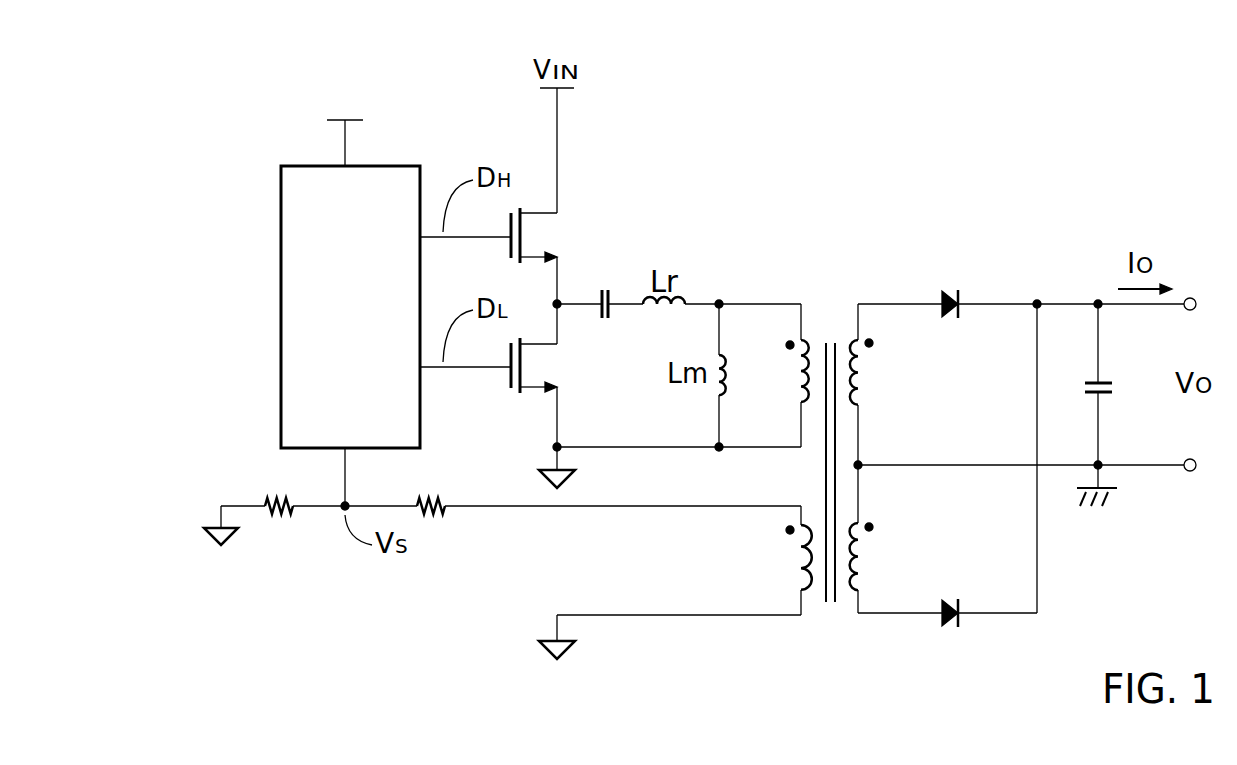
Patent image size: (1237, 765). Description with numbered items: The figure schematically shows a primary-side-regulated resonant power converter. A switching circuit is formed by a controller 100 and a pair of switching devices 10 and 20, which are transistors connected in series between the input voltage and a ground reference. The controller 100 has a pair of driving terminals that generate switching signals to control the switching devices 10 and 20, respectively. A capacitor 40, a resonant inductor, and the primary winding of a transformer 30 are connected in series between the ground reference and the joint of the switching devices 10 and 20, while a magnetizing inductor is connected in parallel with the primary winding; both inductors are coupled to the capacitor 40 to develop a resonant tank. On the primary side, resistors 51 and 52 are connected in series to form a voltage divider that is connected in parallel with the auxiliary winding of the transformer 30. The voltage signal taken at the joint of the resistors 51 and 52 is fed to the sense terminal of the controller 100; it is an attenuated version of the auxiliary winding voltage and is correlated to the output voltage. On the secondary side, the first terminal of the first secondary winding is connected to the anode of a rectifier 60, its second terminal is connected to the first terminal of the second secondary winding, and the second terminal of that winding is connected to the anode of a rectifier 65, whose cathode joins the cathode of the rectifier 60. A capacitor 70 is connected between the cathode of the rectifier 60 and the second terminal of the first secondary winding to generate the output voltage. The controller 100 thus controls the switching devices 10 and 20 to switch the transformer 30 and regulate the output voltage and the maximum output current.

The controller 100 is at (302, 166).
The switching device 10 is at (558, 240).
The switching device 20 is at (558, 362).
The capacitor 40 is at (604, 286).
The transformer 30 is at (828, 322).
The rectifier 60 is at (950, 287).
The rectifier 65 is at (960, 628).
The capacitor 70 is at (1113, 385).
The resistor 51 is at (430, 520).
The resistor 52 is at (278, 520).